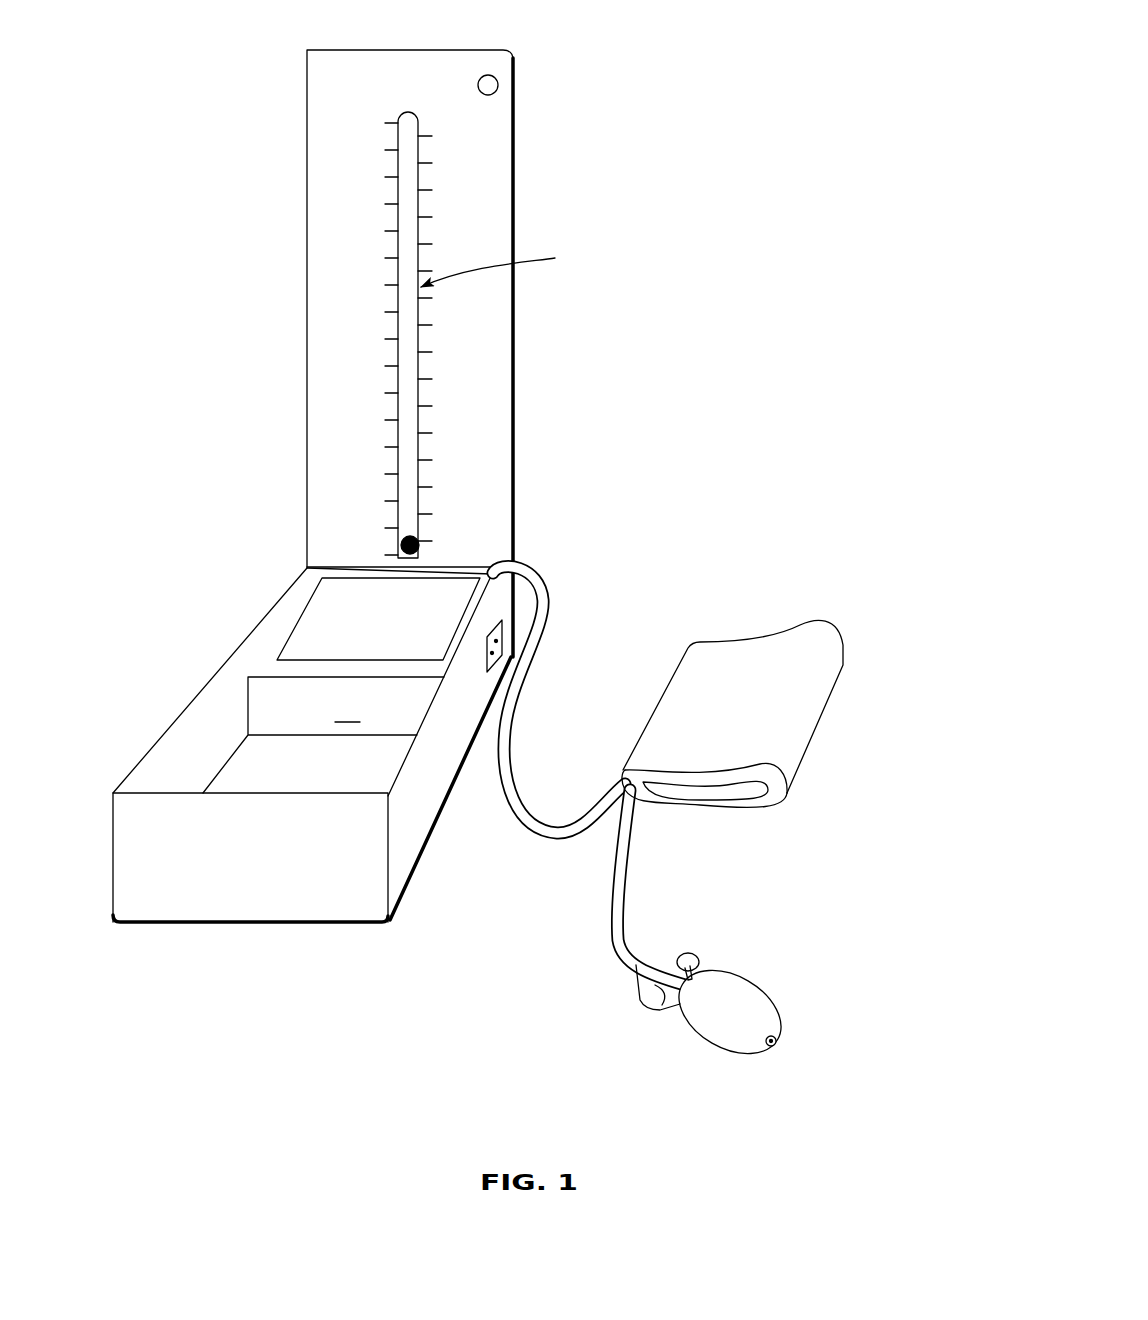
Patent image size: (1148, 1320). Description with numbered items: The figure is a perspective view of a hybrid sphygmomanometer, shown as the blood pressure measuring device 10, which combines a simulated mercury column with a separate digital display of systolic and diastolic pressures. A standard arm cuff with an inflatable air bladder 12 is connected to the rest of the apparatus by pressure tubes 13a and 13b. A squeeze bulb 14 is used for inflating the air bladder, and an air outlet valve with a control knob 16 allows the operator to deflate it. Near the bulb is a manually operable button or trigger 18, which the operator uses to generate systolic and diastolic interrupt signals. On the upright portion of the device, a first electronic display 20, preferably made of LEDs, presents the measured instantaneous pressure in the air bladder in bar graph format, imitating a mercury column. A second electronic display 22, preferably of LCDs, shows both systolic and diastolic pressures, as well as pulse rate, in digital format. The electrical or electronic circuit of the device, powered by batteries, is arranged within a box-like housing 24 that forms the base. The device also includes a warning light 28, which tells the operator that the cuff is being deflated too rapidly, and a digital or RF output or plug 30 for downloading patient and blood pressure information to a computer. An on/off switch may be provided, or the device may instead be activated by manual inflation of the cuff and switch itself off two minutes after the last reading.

The blood pressure measuring device 10 is at (243, 345).
The inflatable air bladder 12 is at (830, 623).
The pressure tube 13a is at (540, 838).
The pressure tube 13b is at (632, 846).
The squeeze bulb 14 is at (776, 1006).
The control knob 16 is at (690, 955).
The manually operable button or trigger 18 is at (660, 990).
The first electronic display 20 is at (516, 400).
The second electronic display 22 is at (305, 638).
The box-like housing 24 is at (280, 607).
The warning light 28 is at (509, 77).
The digital or RF output or plug 30 is at (507, 635).